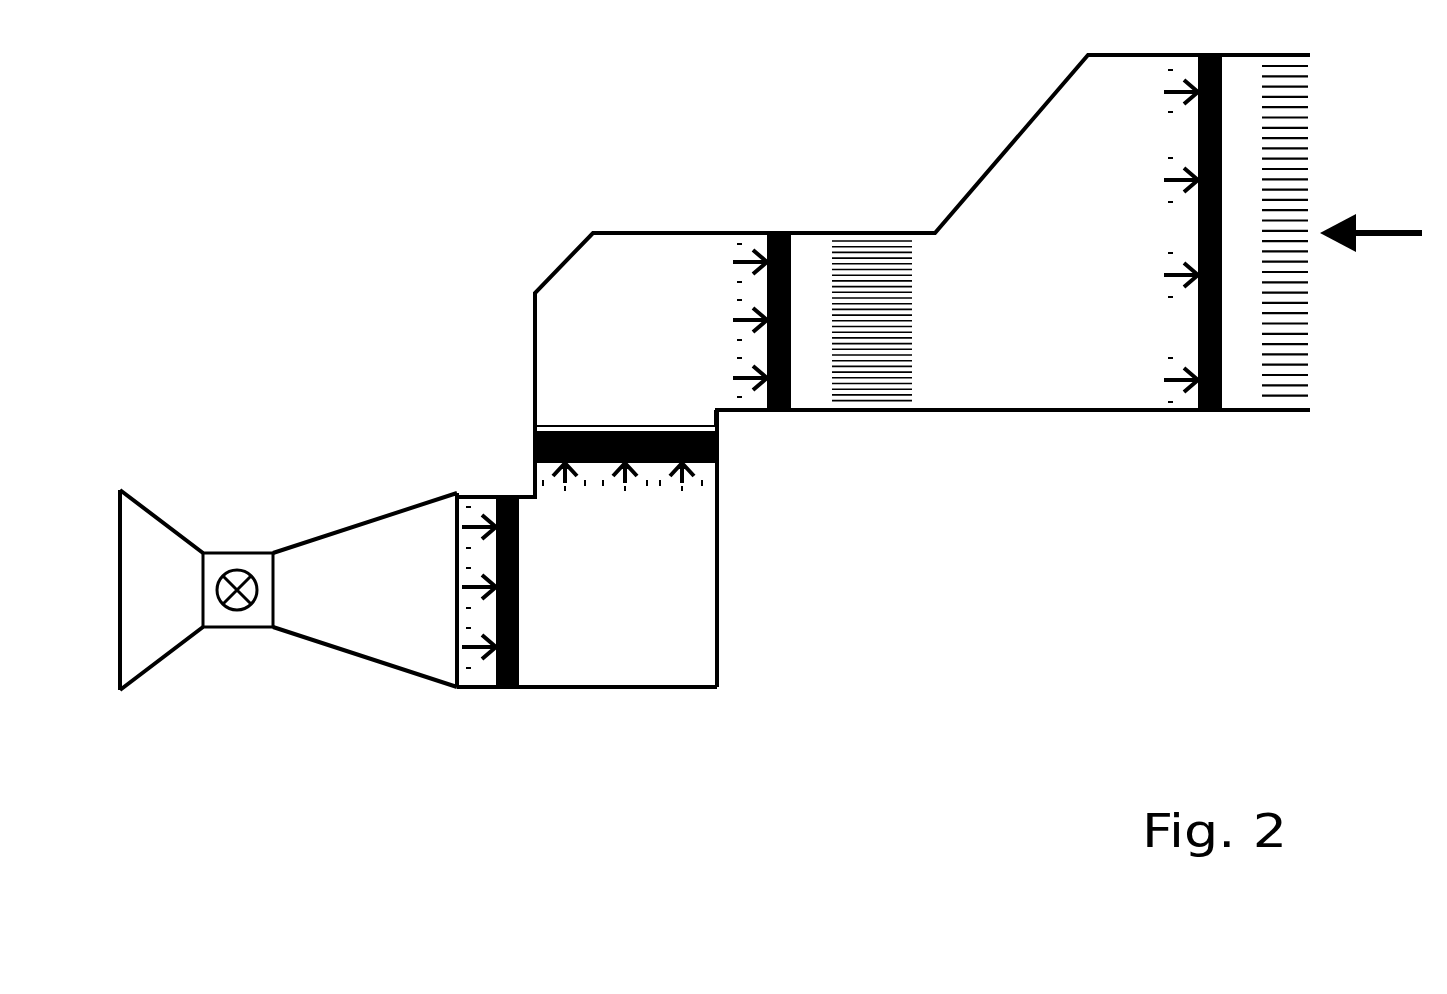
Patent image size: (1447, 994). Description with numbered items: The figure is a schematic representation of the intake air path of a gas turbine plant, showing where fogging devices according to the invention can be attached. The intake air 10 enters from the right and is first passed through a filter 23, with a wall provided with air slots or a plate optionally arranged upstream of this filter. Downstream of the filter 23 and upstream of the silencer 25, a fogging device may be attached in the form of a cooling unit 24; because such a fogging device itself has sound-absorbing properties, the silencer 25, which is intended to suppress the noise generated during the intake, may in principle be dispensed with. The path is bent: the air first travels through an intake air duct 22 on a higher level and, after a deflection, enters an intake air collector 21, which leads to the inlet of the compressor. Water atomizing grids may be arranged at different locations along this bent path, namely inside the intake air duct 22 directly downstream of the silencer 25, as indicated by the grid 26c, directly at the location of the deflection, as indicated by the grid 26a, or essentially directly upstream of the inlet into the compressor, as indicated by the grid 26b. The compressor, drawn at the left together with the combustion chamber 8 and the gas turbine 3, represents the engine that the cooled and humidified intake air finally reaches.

The gas turbine 3 is at (152, 602).
The combustion chamber 8 is at (233, 568).
The intake air 10 is at (1376, 259).
The intake air collector 21 is at (723, 444).
The intake air duct 22 is at (513, 40).
The filter 23 is at (1283, 378).
The cooling unit 24 is at (1198, 412).
The silencer 25 is at (850, 382).
The water atomizing grid 26a is at (535, 463).
The water atomizing grid 26b is at (507, 687).
The water atomizing grid 26c is at (767, 233).